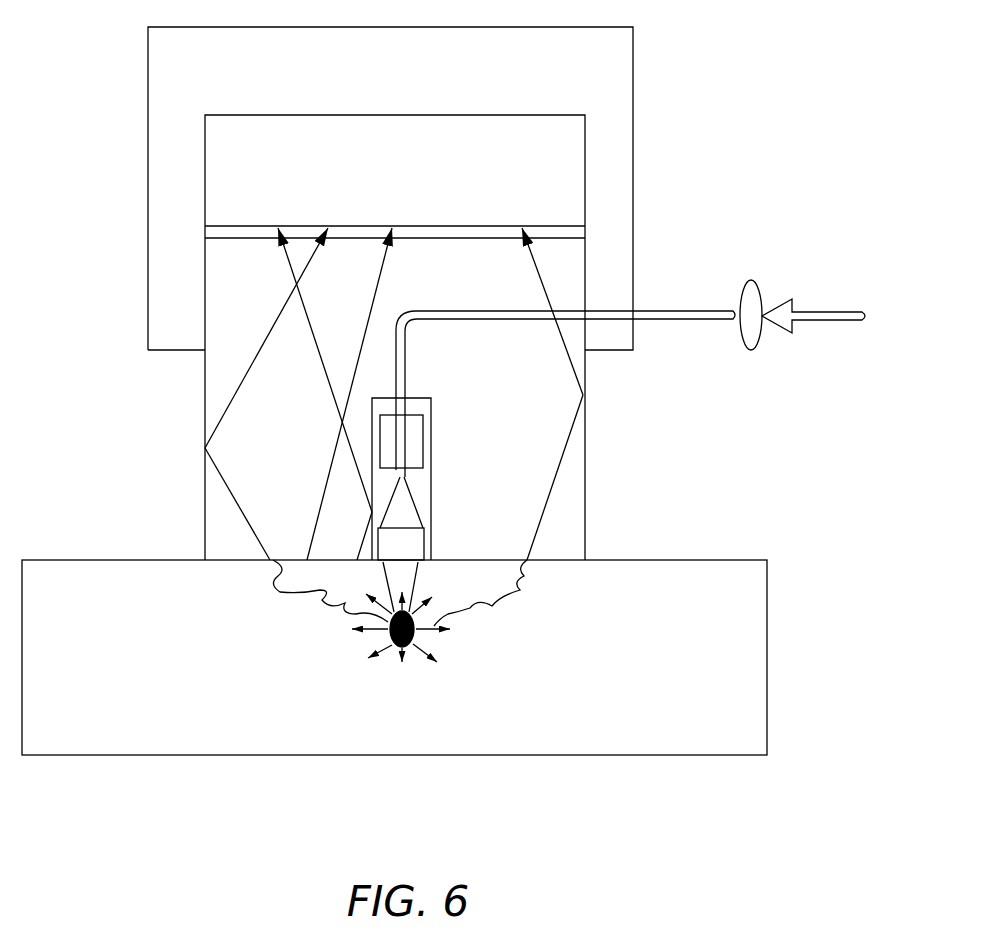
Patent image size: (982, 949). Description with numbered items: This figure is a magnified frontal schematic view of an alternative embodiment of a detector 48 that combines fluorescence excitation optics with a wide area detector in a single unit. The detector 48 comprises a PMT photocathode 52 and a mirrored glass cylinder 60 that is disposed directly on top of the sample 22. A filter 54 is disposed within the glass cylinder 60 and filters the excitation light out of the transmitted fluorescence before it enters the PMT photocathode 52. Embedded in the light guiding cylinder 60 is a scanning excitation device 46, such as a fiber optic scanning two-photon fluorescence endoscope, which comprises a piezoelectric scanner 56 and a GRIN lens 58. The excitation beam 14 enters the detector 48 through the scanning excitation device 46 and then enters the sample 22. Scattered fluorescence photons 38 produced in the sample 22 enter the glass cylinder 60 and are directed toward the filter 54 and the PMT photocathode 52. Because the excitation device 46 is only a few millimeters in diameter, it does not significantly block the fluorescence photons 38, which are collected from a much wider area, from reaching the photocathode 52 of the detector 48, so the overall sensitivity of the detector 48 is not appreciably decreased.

The excitation beam 14 is at (833, 321).
The sample 22 is at (675, 708).
The scattered fluorescence photons 38 is at (398, 650).
The scanning excitation device 46 is at (430, 490).
The detector 48 is at (86, 112).
The PMT photocathode 52 is at (565, 135).
The filter 54 is at (577, 232).
The piezoelectric scanner 56 is at (422, 437).
The GRIN lens 58 is at (418, 543).
The mirrored glass cylinder 60 is at (553, 277).